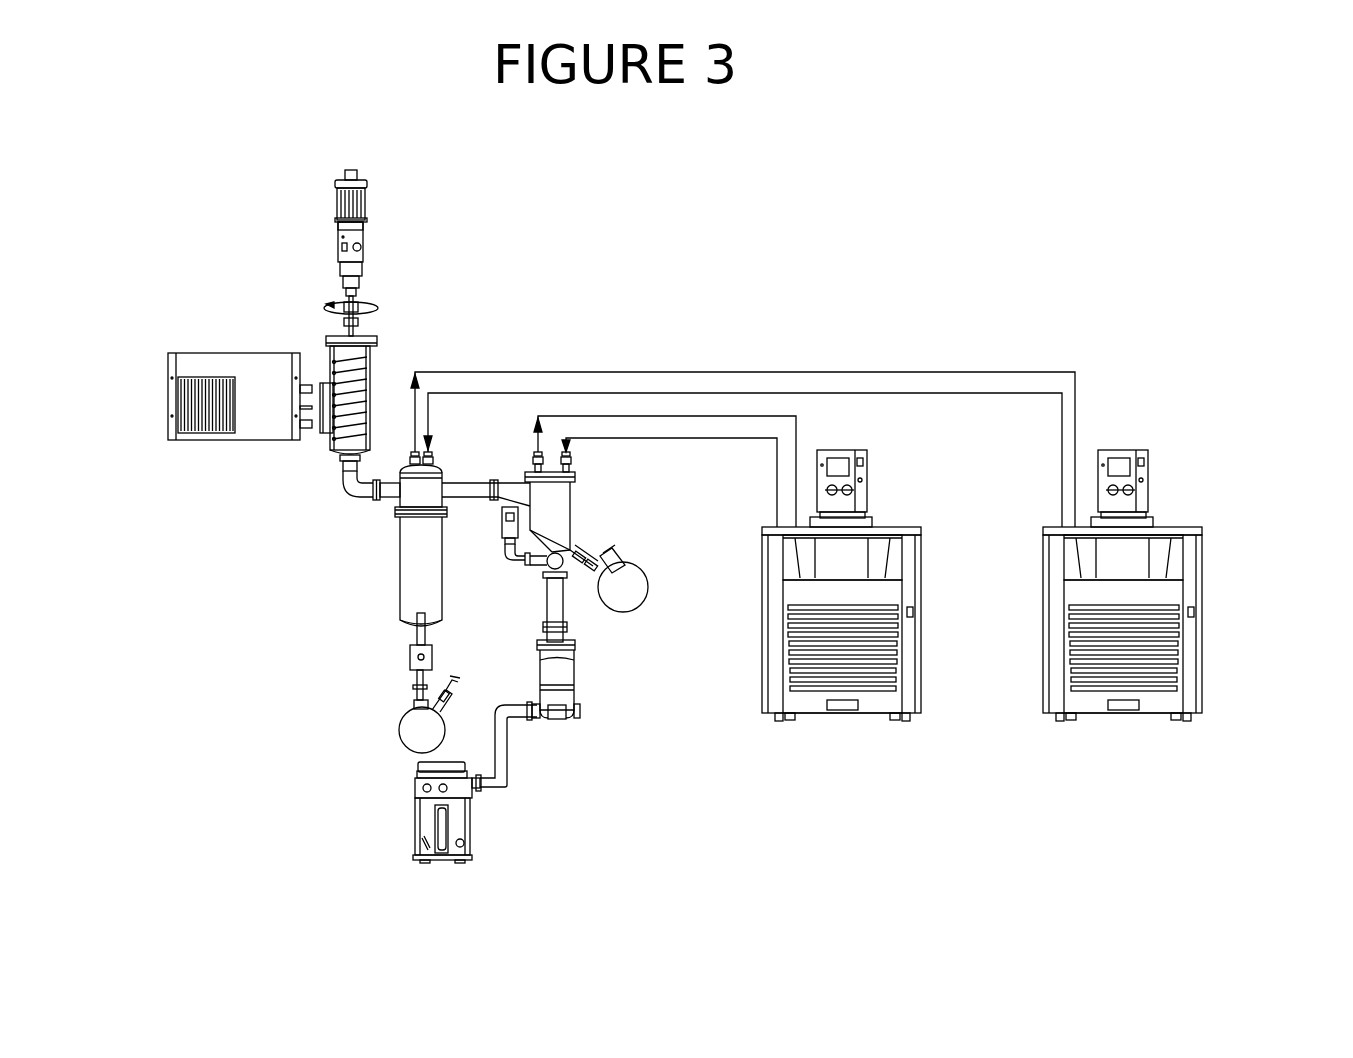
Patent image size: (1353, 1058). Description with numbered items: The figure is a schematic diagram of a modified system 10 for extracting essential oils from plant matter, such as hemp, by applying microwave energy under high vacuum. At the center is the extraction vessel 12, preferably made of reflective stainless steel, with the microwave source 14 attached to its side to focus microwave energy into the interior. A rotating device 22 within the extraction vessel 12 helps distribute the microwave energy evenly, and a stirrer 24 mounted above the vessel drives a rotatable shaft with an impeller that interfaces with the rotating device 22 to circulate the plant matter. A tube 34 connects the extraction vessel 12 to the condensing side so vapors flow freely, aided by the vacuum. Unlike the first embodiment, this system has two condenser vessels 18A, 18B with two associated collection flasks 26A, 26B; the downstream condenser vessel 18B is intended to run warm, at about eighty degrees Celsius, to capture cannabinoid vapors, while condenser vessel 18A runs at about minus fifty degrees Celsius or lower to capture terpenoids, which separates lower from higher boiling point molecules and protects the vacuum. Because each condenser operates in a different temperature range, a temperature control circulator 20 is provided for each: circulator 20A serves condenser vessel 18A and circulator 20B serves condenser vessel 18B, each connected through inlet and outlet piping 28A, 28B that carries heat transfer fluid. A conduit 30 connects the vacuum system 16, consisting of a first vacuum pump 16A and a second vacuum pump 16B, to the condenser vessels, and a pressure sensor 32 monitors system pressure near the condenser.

The system 10 is at (622, 314).
The extraction vessel 12 is at (385, 372).
The microwave source 14 is at (160, 352).
The vacuum system 16 is at (553, 790).
The first vacuum pump 16A is at (388, 847).
The second vacuum pump 16B is at (588, 706).
The condenser vessel 18A is at (585, 517).
The condenser vessel 18B is at (393, 571).
The temperature control circulator 20 is at (994, 842).
The temperature control circulator 20A is at (940, 685).
The temperature control circulator 20B is at (1220, 685).
The rotating device 22 is at (333, 452).
The stirrer 24 is at (385, 215).
The collection flask 26A is at (648, 608).
The collection flask 26B is at (388, 741).
The inlet and outlet piping 28A is at (810, 427).
The inlet and outlet piping 28B is at (758, 365).
The conduit 30 is at (543, 597).
The pressure sensor 32 is at (497, 526).
The tube 34 is at (335, 500).